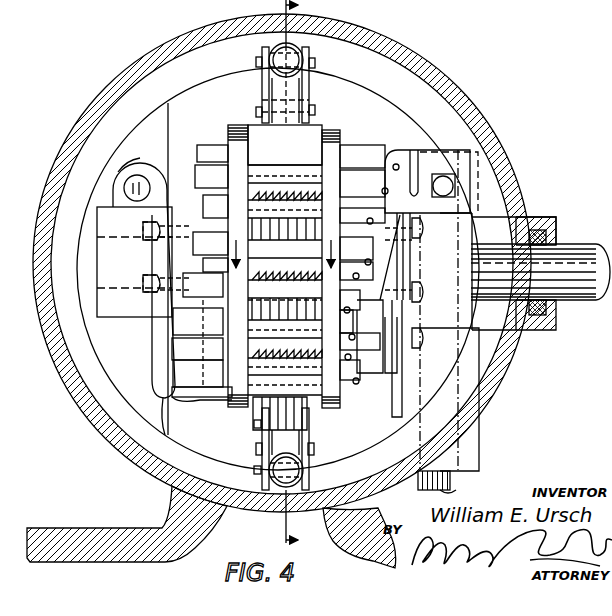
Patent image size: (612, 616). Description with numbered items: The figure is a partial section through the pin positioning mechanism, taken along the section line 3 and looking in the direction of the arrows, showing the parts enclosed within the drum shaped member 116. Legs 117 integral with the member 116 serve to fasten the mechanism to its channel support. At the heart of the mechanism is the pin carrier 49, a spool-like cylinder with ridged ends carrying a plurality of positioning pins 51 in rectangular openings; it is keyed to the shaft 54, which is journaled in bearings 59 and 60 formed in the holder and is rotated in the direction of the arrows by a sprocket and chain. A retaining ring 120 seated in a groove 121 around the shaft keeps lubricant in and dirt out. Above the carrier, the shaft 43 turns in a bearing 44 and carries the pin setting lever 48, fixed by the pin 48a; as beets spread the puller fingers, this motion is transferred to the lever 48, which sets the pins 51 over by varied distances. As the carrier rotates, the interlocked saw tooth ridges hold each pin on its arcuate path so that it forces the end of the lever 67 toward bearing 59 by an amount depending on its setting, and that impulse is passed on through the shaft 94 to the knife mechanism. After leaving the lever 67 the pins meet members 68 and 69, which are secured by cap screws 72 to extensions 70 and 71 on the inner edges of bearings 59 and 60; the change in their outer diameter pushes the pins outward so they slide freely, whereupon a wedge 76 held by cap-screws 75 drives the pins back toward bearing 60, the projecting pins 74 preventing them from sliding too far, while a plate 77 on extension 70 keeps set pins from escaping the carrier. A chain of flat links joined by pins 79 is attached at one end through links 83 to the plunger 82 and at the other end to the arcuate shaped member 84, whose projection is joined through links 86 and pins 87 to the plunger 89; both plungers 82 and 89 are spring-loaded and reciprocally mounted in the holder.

The section line 3- 3 is at (299, 276).
The shaft 43 is at (124, 190).
The bearing 44 is at (160, 166).
The pin setting lever 48 is at (151, 352).
The pin 48a is at (120, 166).
The pin carrier 49 is at (340, 135).
The positioning pins 51 is at (205, 146).
The shaft 54 is at (583, 262).
The bearing 59 is at (470, 328).
The bearing 60 is at (103, 320).
The lever 67 is at (426, 155).
The member 68 is at (360, 355).
The member 69 is at (213, 398).
The extension 70 is at (393, 374).
The extension 71 is at (163, 385).
The cap screws 72 is at (143, 230).
The projecting pins 74 is at (396, 165).
The cap-screws 75 is at (416, 303).
The wedge 76 is at (398, 262).
The plate 77 is at (402, 398).
The pins 79 is at (254, 425).
The plunger 82 is at (298, 482).
The links 83 is at (309, 450).
The arcuate shaped member 84 is at (252, 110).
The links 86 is at (262, 80).
The pins 87 is at (315, 63).
The plunger 89 is at (303, 48).
The shaft 94 is at (451, 485).
The drum shaped member 116 is at (469, 103).
The legs 117 is at (57, 528).
The retaining ring 120 is at (546, 240).
The groove 121 is at (560, 212).